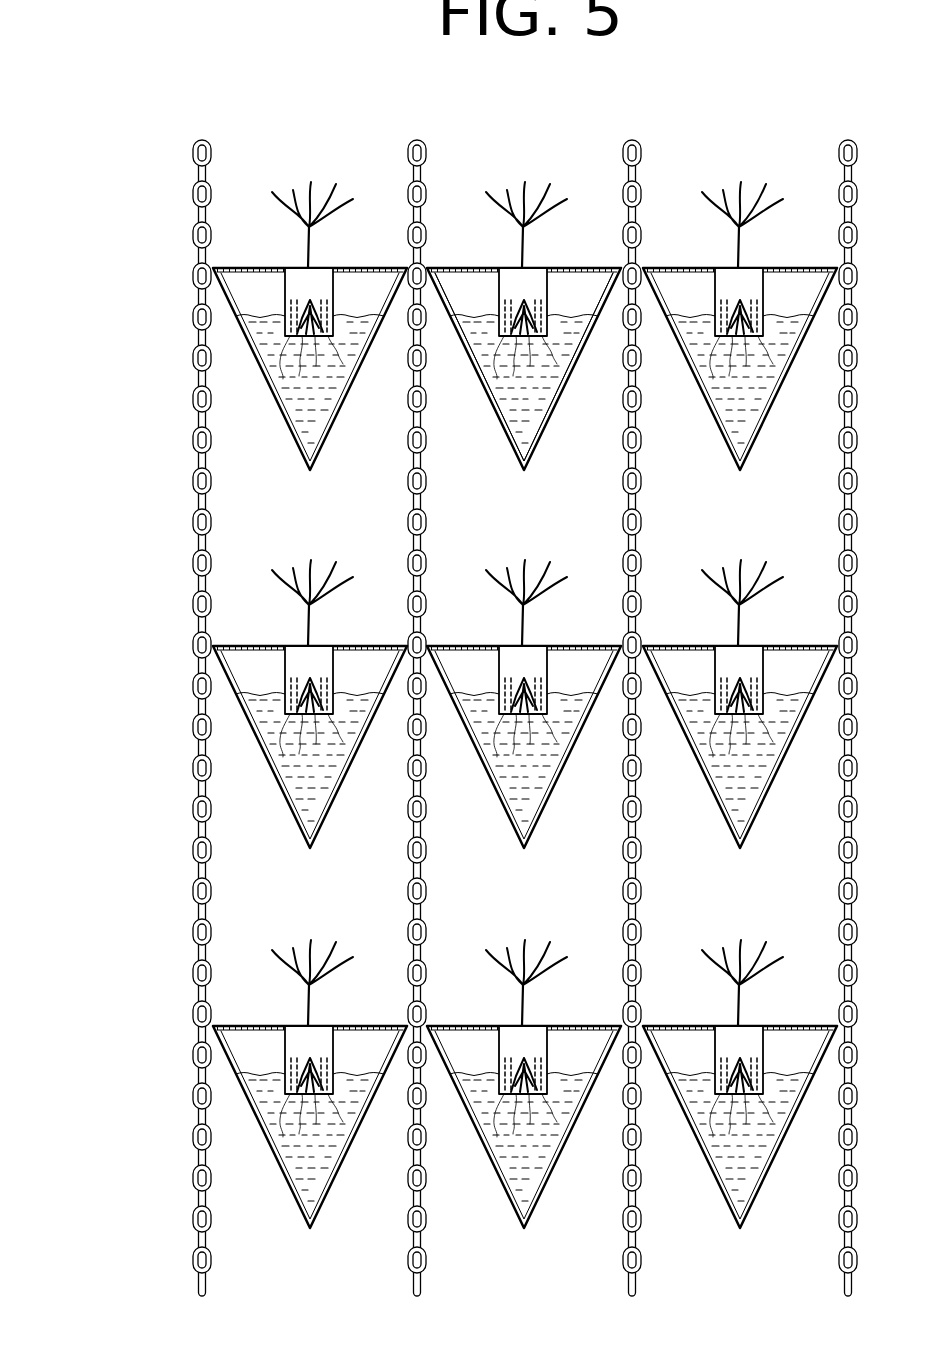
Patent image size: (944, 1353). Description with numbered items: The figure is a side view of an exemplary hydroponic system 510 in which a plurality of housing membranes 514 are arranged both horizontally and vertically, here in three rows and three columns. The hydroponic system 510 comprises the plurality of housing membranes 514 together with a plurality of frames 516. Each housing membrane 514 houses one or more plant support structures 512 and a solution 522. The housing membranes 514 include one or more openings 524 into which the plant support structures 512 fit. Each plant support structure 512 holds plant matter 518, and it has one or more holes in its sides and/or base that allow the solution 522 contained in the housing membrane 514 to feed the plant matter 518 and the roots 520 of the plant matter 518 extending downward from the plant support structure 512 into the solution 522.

The hydroponic system 510 is at (128, 168).
The plant support structure 512 is at (550, 270).
The housing membrane 514 is at (484, 337).
The frame 516 is at (524, 367).
The plant matter 518 is at (312, 191).
The roots 520 is at (340, 374).
The solution 522 is at (300, 381).
The opening 524 is at (469, 204).